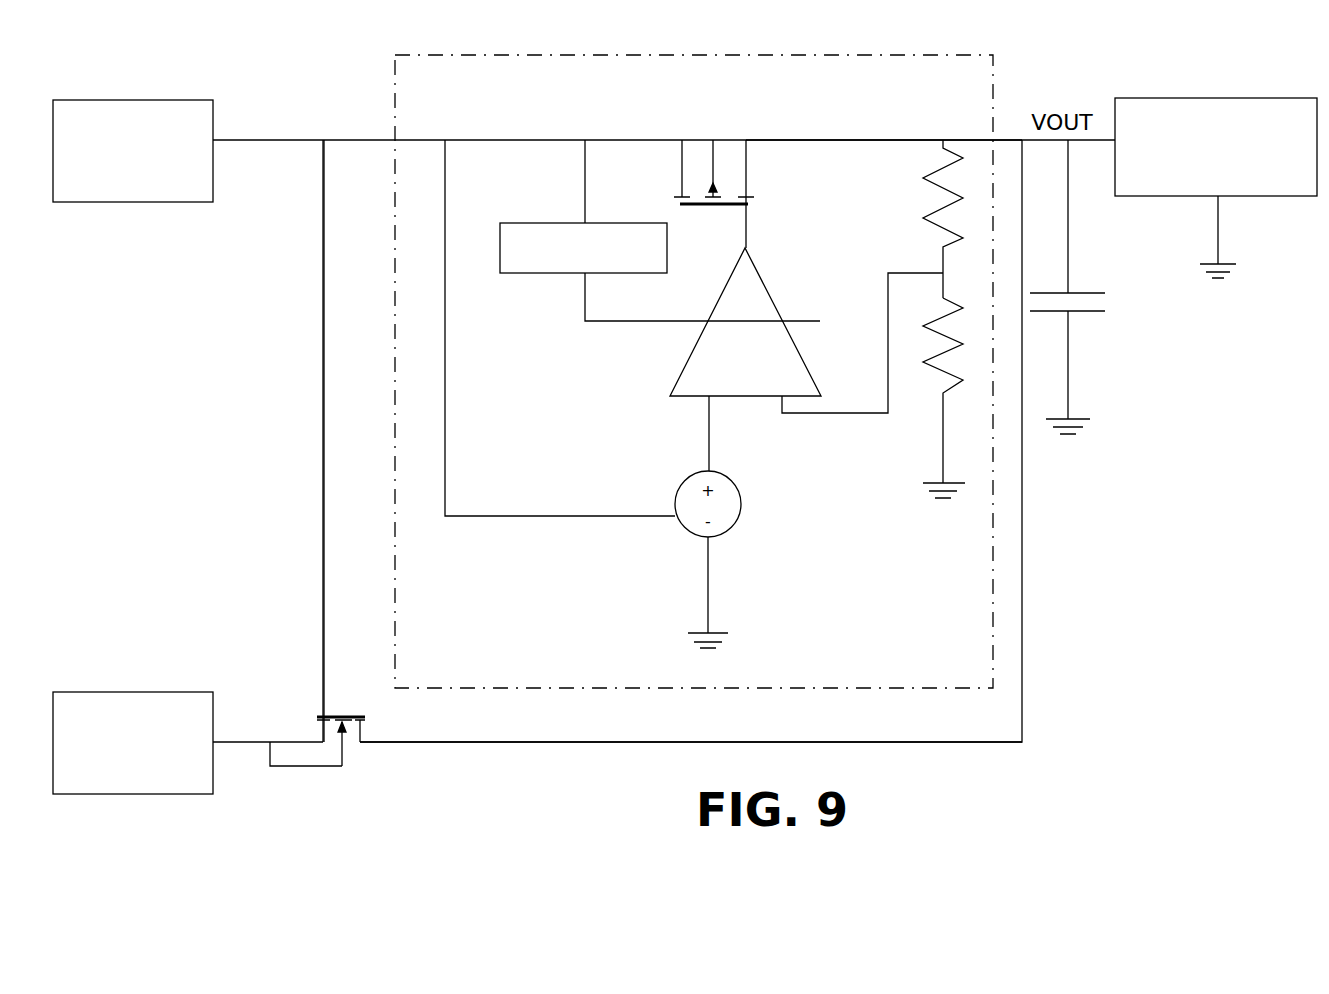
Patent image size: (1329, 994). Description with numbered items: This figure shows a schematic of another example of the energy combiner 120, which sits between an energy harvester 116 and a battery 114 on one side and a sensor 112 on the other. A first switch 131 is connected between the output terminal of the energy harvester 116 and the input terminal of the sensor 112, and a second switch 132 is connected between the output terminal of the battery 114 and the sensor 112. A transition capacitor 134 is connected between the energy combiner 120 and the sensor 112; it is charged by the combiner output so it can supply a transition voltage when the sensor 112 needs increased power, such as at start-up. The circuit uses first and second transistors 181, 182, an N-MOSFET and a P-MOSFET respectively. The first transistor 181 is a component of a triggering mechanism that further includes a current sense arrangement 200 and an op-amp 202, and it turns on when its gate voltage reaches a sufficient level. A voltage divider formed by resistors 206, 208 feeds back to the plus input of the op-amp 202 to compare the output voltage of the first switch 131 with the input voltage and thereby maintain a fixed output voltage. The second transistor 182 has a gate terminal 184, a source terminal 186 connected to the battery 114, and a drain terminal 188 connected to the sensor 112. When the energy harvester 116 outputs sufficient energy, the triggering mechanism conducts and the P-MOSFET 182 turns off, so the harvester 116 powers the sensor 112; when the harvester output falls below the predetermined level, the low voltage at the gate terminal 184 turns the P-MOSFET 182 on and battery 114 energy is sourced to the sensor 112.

The sensor 112 is at (1203, 98).
The battery 114 is at (170, 690).
The energy harvester 116 is at (195, 98).
The energy combiner 120 is at (1010, 97).
The first switch 131 is at (818, 155).
The second switch 132 is at (455, 760).
The transition capacitor 134 is at (1068, 315).
The first transistor 181 is at (531, 438).
The second transistor 182 is at (350, 766).
The gate terminal 184 is at (680, 197).
The source terminal 186 is at (722, 215).
The drain terminal 188 is at (750, 190).
The current sense arrangement 200 is at (548, 222).
The op-amp 202 is at (745, 295).
The resistor 206 is at (928, 178).
The resistor 208 is at (935, 395).